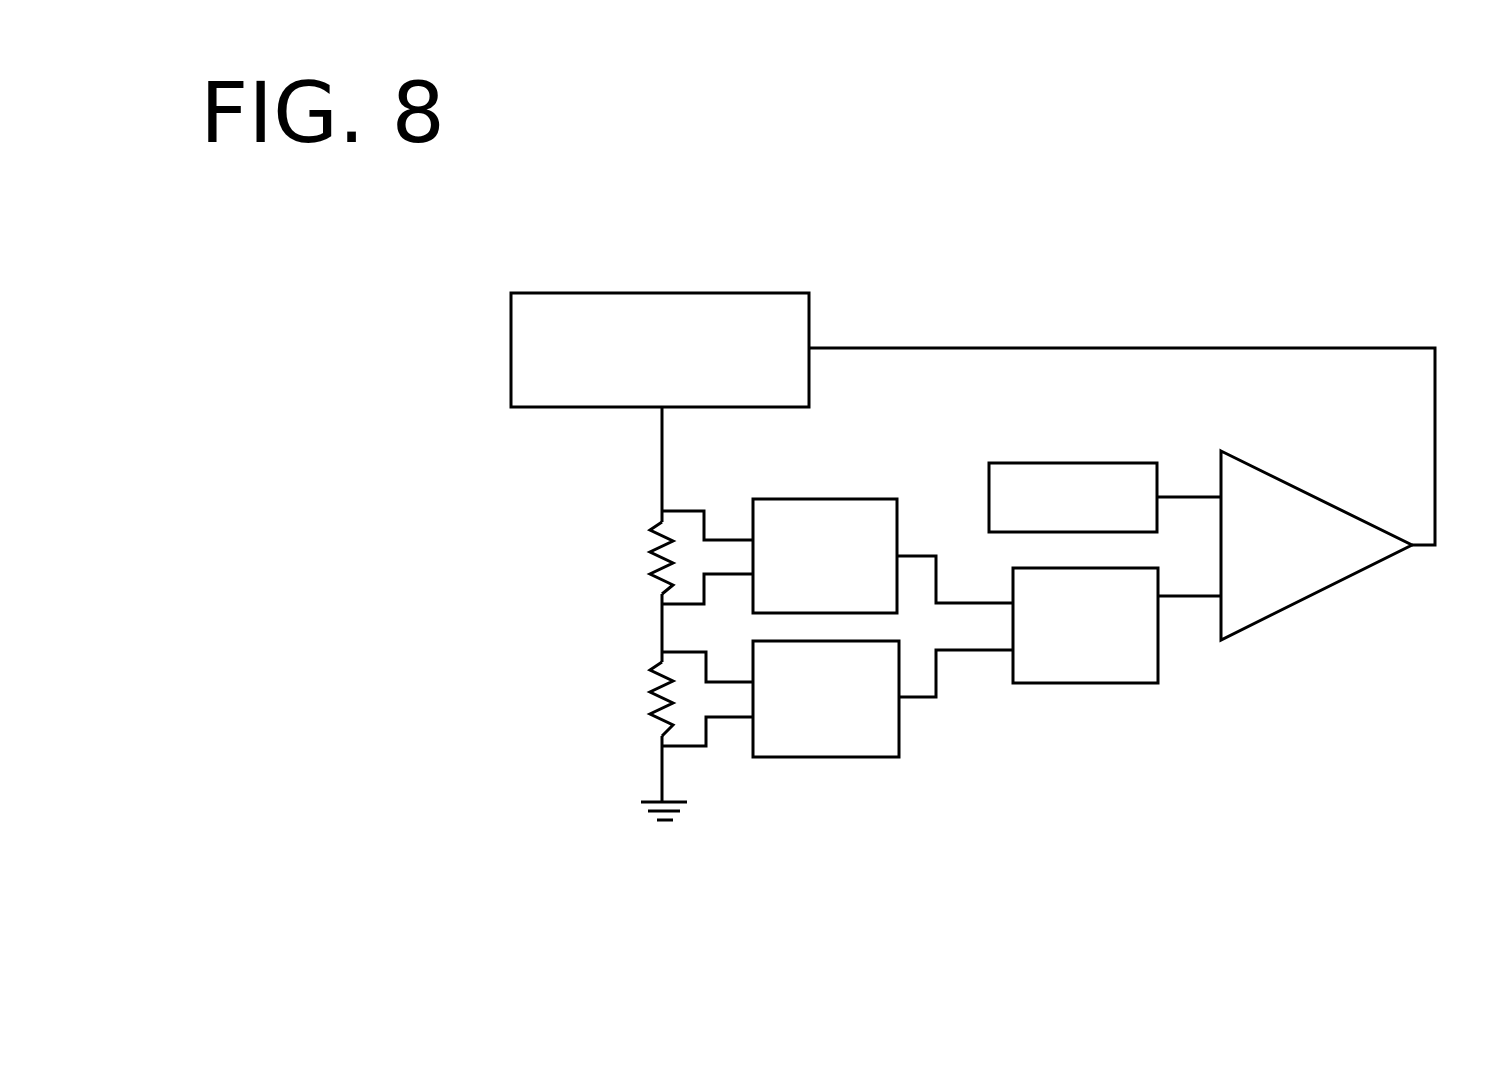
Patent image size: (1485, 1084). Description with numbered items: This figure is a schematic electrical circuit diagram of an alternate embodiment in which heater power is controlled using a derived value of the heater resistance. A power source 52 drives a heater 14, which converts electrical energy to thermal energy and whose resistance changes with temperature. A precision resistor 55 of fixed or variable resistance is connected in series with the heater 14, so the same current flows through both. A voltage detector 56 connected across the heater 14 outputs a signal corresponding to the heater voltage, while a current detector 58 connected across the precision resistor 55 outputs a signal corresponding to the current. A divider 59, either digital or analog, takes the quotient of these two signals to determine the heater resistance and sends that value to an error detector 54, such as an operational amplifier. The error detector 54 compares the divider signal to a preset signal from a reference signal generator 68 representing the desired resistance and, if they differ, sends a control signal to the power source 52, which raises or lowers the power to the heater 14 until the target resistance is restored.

The power source 52 is at (510, 354).
The heater 14 is at (652, 567).
The precision resistor 55 is at (655, 705).
The voltage detector 56 is at (857, 498).
The current detector 58 is at (820, 757).
The reference signal generator 68 is at (1117, 463).
The divider 59 is at (1078, 683).
The error detector 54 is at (1311, 595).